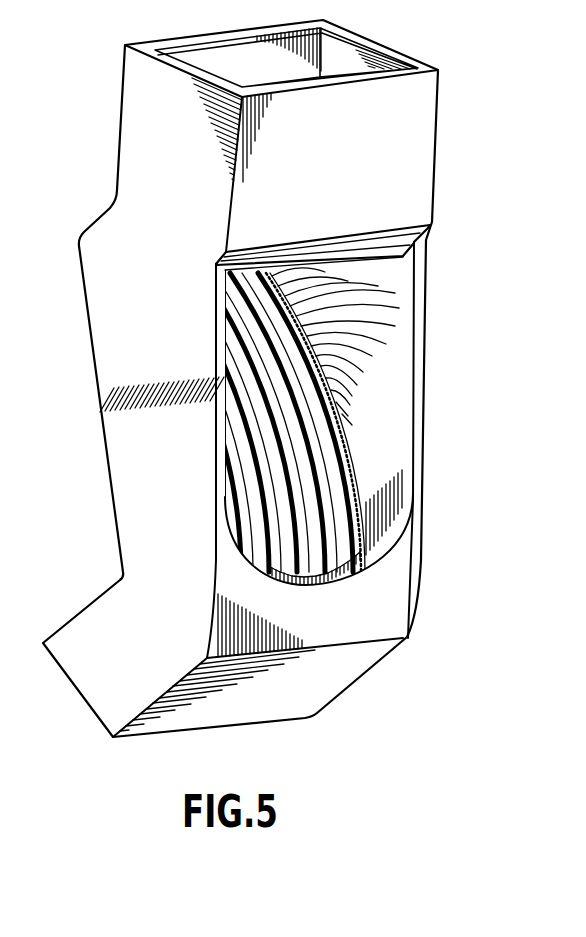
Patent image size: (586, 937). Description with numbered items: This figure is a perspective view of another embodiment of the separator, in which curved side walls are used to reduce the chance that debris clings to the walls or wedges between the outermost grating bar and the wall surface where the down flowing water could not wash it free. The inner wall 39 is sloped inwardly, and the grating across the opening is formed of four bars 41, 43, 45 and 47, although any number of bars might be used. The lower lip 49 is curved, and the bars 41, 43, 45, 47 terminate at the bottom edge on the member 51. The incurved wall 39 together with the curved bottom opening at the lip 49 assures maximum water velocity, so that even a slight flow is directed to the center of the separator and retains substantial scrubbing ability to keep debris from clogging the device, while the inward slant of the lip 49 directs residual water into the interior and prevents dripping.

The inner wall 39 is at (372, 356).
The bar 41 is at (240, 497).
The bar 43 is at (237, 435).
The bar 45 is at (328, 525).
The bar 47 is at (352, 497).
The lower lip 49 is at (270, 578).
The member 51 is at (330, 586).